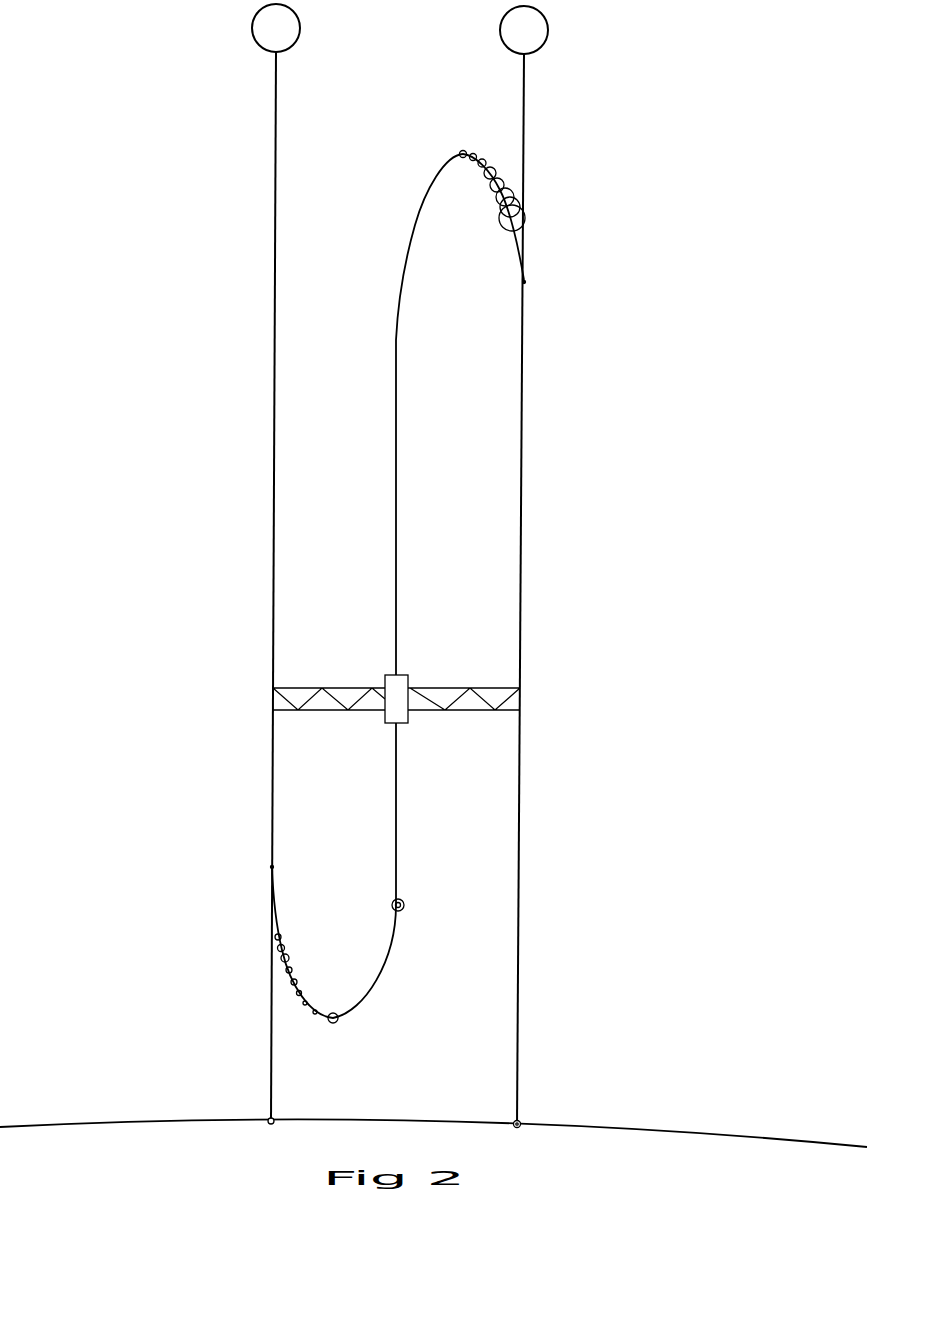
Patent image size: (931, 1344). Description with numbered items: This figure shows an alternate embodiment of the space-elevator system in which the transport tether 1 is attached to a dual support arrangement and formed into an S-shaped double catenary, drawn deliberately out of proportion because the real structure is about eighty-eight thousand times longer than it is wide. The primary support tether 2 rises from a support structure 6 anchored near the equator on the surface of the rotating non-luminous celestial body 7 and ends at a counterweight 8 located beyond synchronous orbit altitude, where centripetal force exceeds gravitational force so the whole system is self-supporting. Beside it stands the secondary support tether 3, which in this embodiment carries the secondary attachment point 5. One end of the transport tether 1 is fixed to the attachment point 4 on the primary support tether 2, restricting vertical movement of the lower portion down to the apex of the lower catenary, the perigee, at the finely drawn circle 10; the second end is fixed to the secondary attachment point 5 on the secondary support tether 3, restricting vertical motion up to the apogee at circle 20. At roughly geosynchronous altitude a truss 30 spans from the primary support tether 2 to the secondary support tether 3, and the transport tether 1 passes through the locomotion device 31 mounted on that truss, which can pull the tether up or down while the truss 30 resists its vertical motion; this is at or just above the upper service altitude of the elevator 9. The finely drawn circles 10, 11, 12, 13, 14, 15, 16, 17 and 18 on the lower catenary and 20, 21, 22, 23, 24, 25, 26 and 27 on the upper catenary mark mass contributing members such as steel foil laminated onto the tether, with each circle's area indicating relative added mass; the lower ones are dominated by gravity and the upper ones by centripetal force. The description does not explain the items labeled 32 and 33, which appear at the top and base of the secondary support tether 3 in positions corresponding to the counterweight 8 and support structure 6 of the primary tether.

The transport tether 1 is at (514, 256).
The primary support tether 2 is at (272, 518).
The secondary support tether 3 is at (527, 95).
The attachment point 4 is at (270, 868).
The secondary attachment point 5 is at (527, 283).
The support structure 6 is at (267, 1117).
The rotating non-luminous celestial body 7 is at (86, 1122).
The counterweight 8 is at (254, 34).
The elevator 9 is at (405, 903).
The mass contributing member 10 is at (333, 1024).
The mass contributing member 11 is at (314, 1016).
The mass contributing member 12 is at (304, 1006).
The mass contributing member 13 is at (298, 996).
The mass contributing member 14 is at (296, 983).
The mass contributing member 15 is at (291, 970).
The mass contributing member 16 is at (287, 958).
The mass contributing member 17 is at (283, 946).
The mass contributing member 18 is at (280, 934).
The mass contributing member 20 is at (459, 154).
The mass contributing member 21 is at (471, 154).
The mass contributing member 22 is at (480, 160).
The mass contributing member 23 is at (489, 168).
The mass contributing member 24 is at (502, 190).
The mass contributing member 25 is at (496, 198).
The mass contributing member 26 is at (500, 208).
The mass contributing member 27 is at (505, 230).
The truss 30 is at (310, 690).
The locomotion device 31 is at (409, 678).
The top of second pole 32 is at (548, 45).
The base of second pole 33 is at (521, 1122).